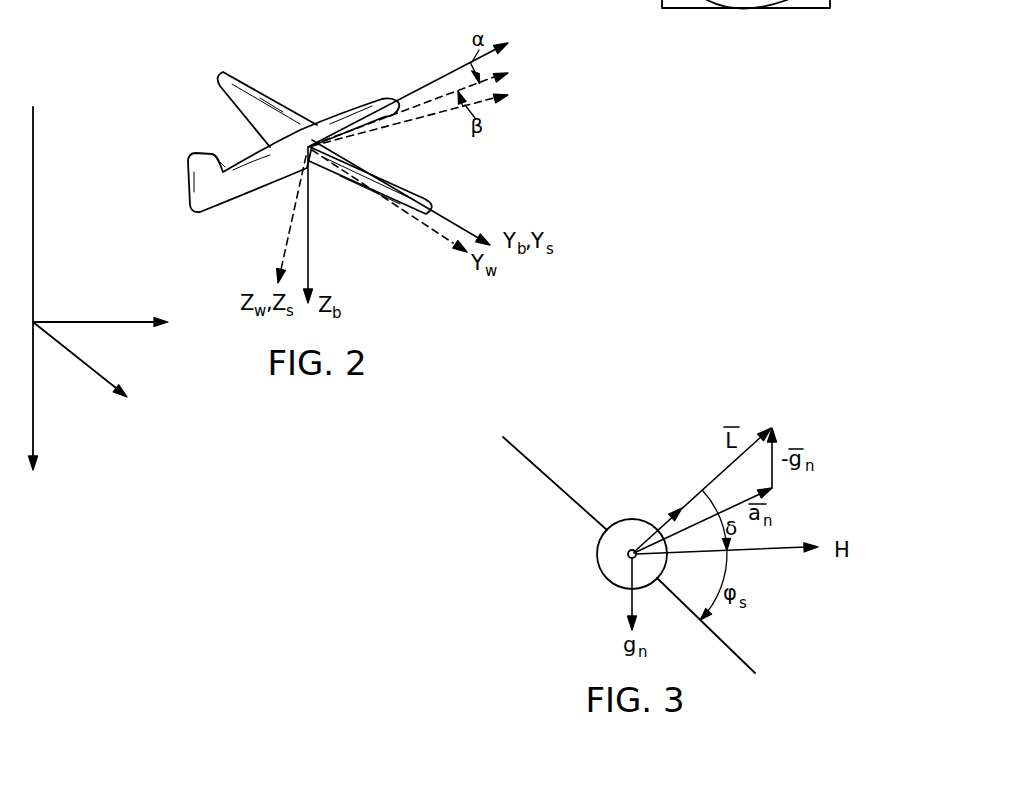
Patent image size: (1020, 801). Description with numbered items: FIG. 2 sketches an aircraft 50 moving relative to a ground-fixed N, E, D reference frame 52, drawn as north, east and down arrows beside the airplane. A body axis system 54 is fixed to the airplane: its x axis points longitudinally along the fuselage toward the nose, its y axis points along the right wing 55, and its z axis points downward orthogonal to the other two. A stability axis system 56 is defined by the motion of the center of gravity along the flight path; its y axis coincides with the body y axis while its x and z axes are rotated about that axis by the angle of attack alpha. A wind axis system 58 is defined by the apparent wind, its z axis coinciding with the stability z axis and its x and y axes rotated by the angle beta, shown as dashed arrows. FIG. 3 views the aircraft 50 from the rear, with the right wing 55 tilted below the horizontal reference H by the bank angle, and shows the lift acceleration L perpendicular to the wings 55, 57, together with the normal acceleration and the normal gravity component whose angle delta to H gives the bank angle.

In FIG. 2, the aircraft 50 is at (347, 110).
In FIG. 3, the aircraft 50 is at (596, 557).
In FIG. 2, the ground-based N, E, D reference frame 52 is at (58, 166).
In FIG. 2, the body axis system 54 is at (444, 74).
In FIG. 2, the right wing 55 is at (431, 198).
In FIG. 3, the right wing 55 is at (753, 664).
In FIG. 2, the stability axis system 56 is at (420, 103).
In FIG. 2, the left wing 57 is at (232, 74).
In FIG. 2, the wind axis system 58 is at (420, 119).